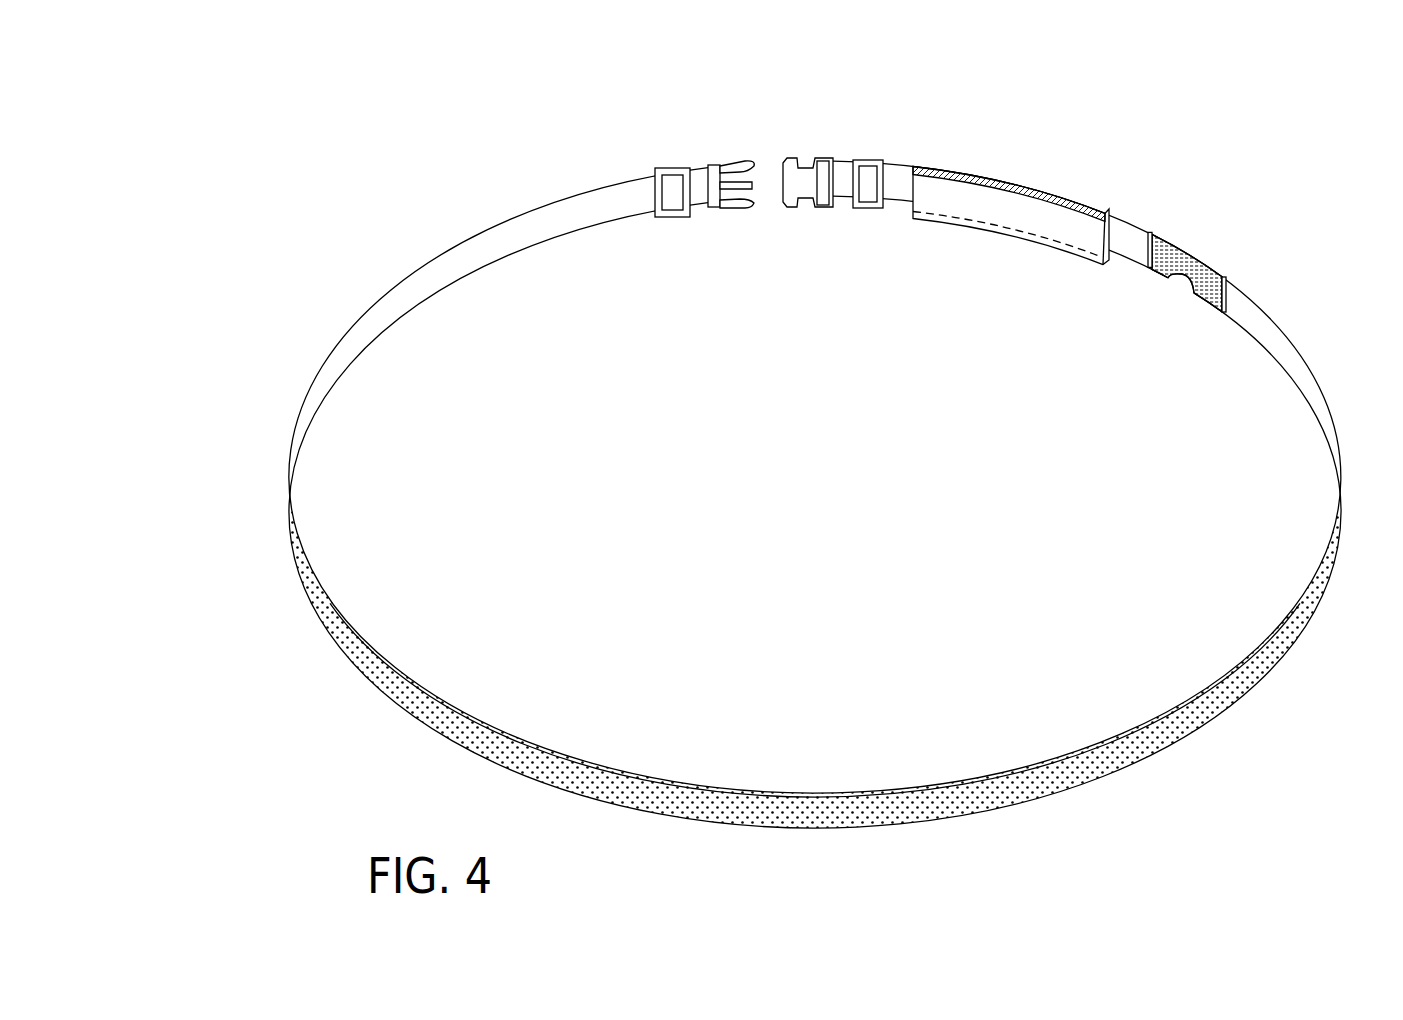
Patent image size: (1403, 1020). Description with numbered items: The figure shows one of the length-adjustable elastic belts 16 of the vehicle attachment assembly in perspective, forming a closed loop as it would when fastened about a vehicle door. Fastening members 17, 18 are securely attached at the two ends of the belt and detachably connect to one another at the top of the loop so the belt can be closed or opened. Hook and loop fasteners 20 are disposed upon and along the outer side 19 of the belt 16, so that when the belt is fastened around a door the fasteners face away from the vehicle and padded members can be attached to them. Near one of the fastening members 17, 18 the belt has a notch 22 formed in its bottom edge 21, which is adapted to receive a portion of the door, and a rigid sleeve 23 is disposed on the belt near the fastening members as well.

The length-adjustable elastic belt 16 is at (1258, 330).
The fastening member 17 is at (718, 163).
The fastening member 18 is at (790, 160).
The outer side 19 is at (1197, 718).
The hook and loop fasteners 20 is at (949, 801).
The bottom edge 21 is at (1266, 352).
The notch 22 is at (1183, 286).
The rigid sleeve 23 is at (965, 172).